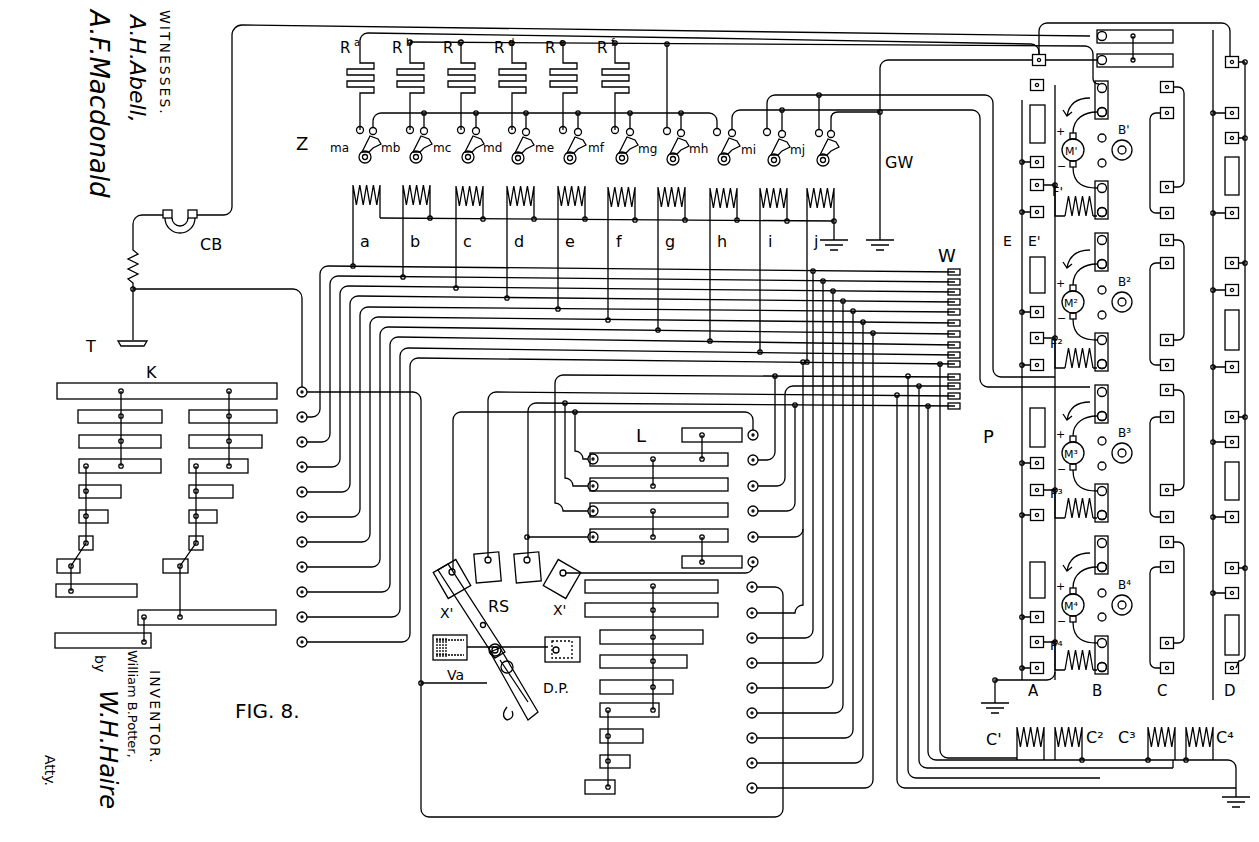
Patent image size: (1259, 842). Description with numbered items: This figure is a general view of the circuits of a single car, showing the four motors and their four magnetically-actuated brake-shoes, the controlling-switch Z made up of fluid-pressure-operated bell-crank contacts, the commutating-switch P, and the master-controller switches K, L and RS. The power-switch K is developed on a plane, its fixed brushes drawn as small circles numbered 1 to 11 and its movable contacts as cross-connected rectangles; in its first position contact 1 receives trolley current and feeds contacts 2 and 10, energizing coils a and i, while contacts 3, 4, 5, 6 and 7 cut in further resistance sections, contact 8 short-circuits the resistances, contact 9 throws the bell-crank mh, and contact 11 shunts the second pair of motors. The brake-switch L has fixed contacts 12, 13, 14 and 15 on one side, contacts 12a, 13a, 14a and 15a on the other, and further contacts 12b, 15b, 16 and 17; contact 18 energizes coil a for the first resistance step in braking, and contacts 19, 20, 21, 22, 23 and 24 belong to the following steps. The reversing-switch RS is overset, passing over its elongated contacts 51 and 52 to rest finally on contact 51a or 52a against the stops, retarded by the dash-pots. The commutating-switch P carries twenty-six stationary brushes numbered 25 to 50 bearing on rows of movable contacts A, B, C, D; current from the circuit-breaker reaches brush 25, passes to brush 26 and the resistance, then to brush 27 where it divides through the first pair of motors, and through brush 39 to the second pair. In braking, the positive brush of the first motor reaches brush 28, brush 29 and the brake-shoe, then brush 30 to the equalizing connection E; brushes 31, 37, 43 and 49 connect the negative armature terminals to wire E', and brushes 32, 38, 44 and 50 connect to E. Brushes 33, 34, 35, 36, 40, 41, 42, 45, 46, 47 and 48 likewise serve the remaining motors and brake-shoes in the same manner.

The fixed contact of power-switch 1 is at (297, 392).
The fixed contact of power-switch 2 is at (295, 417).
The fixed contact of power-switch 3 is at (295, 442).
The fixed contact of power-switch 4 is at (295, 467).
The fixed contact of power-switch 5 is at (295, 492).
The fixed contact of power-switch 6 is at (295, 517).
The fixed contact of power-switch 7 is at (295, 542).
The fixed contact of power-switch 8 is at (295, 567).
The fixed contact of power-switch 9 is at (295, 592).
The fixed contact of power-switch 10 is at (293, 617).
The fixed contact of power-switch 11 is at (293, 642).
The fixed contact of brake-switch 12 is at (655, 451).
The fixed contact of brake-switch 12a is at (744, 453).
The fixed contact of brake-switch 12b is at (720, 428).
The fixed contact of brake-switch 13 is at (648, 478).
The fixed contact of brake-switch 13a is at (744, 479).
The fixed contact of brake-switch 14 is at (644, 504).
The fixed contact of brake-switch 14a is at (744, 504).
The fixed contact of brake-switch 15 is at (644, 529).
The fixed contact of brake-switch 15a is at (744, 530).
The fixed contact of brake-switch 15b is at (720, 555).
The fixed contact of brake-switch 16 is at (671, 587).
The fixed contact of brake-switch 17 is at (671, 612).
The fixed contact of brake-switch 18 is at (678, 638).
The fixed contact of brake-switch 19 is at (678, 663).
The fixed contact of brake-switch 20 is at (678, 688).
The fixed contact of brake-switch 21 is at (678, 712).
The fixed contact of brake-switch 22 is at (678, 737).
The fixed contact of brake-switch 23 is at (678, 763).
The fixed contact of brake-switch 24 is at (671, 788).
The stationary brush of switch P 25 is at (1119, 32).
The stationary brush of switch P 26 is at (1119, 61).
The stationary brush of switch P 27 is at (1088, 100).
The stationary brush of switch P 28 is at (1114, 117).
The stationary brush of switch P 29 is at (1092, 133).
The stationary brush of switch P 30 is at (1093, 171).
The stationary brush of switch P 31 is at (1112, 199).
The stationary brush of switch P 32 is at (1114, 213).
The stationary brush of switch P 33 is at (1087, 251).
The stationary brush of switch P 34 is at (1114, 267).
The stationary brush of switch P 35 is at (1092, 285).
The stationary brush of switch P 36 is at (1093, 323).
The stationary brush of switch P 37 is at (1112, 351).
The stationary brush of switch P 38 is at (1114, 365).
The stationary brush of switch P 39 is at (1112, 403).
The stationary brush of switch P 40 is at (1114, 417).
The stationary brush of switch P 41 is at (1093, 436).
The stationary brush of switch P 42 is at (1093, 473).
The stationary brush of switch P 43 is at (1112, 502).
The stationary brush of switch P 44 is at (1114, 516).
The stationary brush of switch P 45 is at (1087, 555).
The stationary brush of switch P 46 is at (1114, 568).
The stationary brush of switch P 47 is at (1093, 588).
The stationary brush of switch P 48 is at (1093, 625).
The stationary brush of switch P 49 is at (1112, 653).
The stationary brush of switch P 50 is at (1114, 668).
The contact of reversing-switch 51 is at (483, 555).
The contact of reversing-switch 51a is at (452, 566).
The contact of reversing-switch 52 is at (520, 556).
The contact of reversing-switch 52a is at (566, 573).